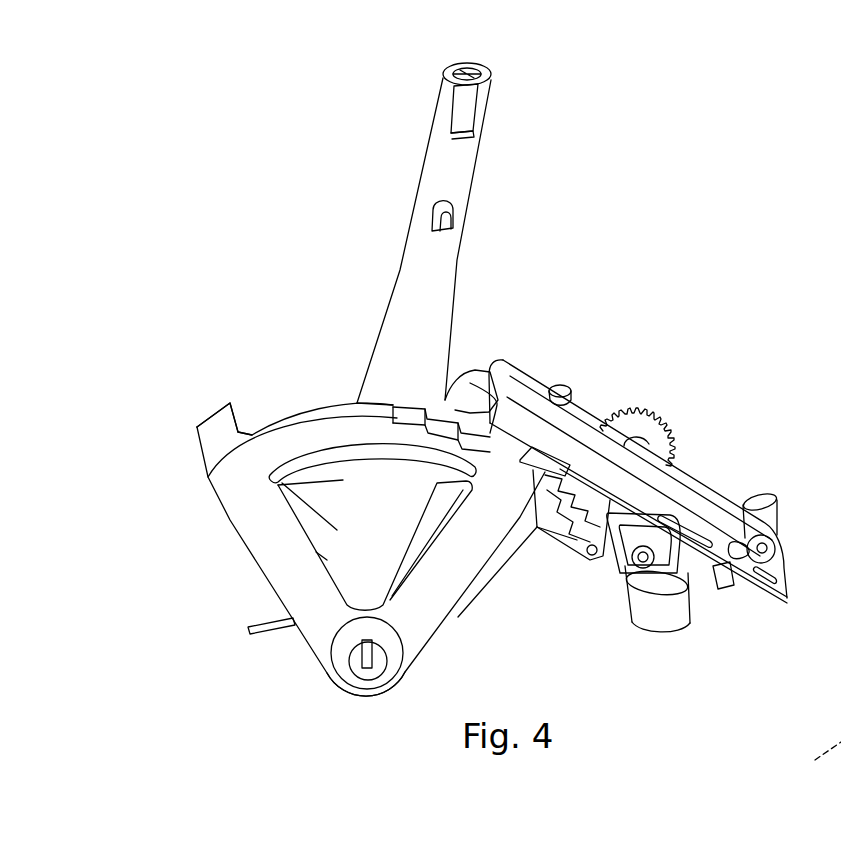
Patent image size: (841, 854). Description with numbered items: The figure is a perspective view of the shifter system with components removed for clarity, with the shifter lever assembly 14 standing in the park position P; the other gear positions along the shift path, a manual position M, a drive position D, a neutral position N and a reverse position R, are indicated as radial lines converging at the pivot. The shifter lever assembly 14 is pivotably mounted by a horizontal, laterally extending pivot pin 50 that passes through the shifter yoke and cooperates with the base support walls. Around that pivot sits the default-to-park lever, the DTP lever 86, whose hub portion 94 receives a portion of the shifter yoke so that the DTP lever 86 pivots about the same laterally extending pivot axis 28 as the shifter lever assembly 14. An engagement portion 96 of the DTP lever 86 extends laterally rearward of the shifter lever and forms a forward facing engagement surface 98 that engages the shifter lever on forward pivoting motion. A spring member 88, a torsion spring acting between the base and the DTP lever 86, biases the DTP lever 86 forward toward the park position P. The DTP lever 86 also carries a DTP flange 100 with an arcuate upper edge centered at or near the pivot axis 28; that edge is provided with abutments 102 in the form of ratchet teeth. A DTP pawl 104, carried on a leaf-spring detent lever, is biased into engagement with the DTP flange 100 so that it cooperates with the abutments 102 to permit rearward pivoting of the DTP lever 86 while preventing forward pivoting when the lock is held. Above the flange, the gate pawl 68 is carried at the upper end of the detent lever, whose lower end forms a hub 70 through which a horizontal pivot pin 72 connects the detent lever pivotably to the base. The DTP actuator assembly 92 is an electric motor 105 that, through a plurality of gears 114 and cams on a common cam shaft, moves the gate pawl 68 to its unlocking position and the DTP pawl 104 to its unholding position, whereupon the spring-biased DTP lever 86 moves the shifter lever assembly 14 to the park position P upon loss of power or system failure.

The shifter lever assembly 14 is at (460, 262).
The pivot axis 28 is at (840, 728).
The pivot pin 50 is at (387, 665).
The gate pawl 68 is at (490, 388).
The hub 70 is at (775, 518).
The pivot pin 72 is at (778, 553).
The DTP lever 86 is at (227, 522).
The spring member 88 is at (268, 640).
The DTP actuator assembly 92 is at (658, 635).
The hub portion 94 is at (323, 663).
The engagement portion 96 is at (208, 415).
The engagement surface 98 is at (240, 432).
The DTP flange 100 is at (290, 417).
The abutments 102 is at (492, 420).
The DTP pawl 104 is at (549, 540).
The electric motor 105 is at (690, 612).
The gears 114 is at (668, 432).
The manual position M is at (365, 650).
The drive position D is at (365, 650).
The neutral position N is at (365, 650).
The reverse position R is at (366, 650).
The park position P is at (468, 73).